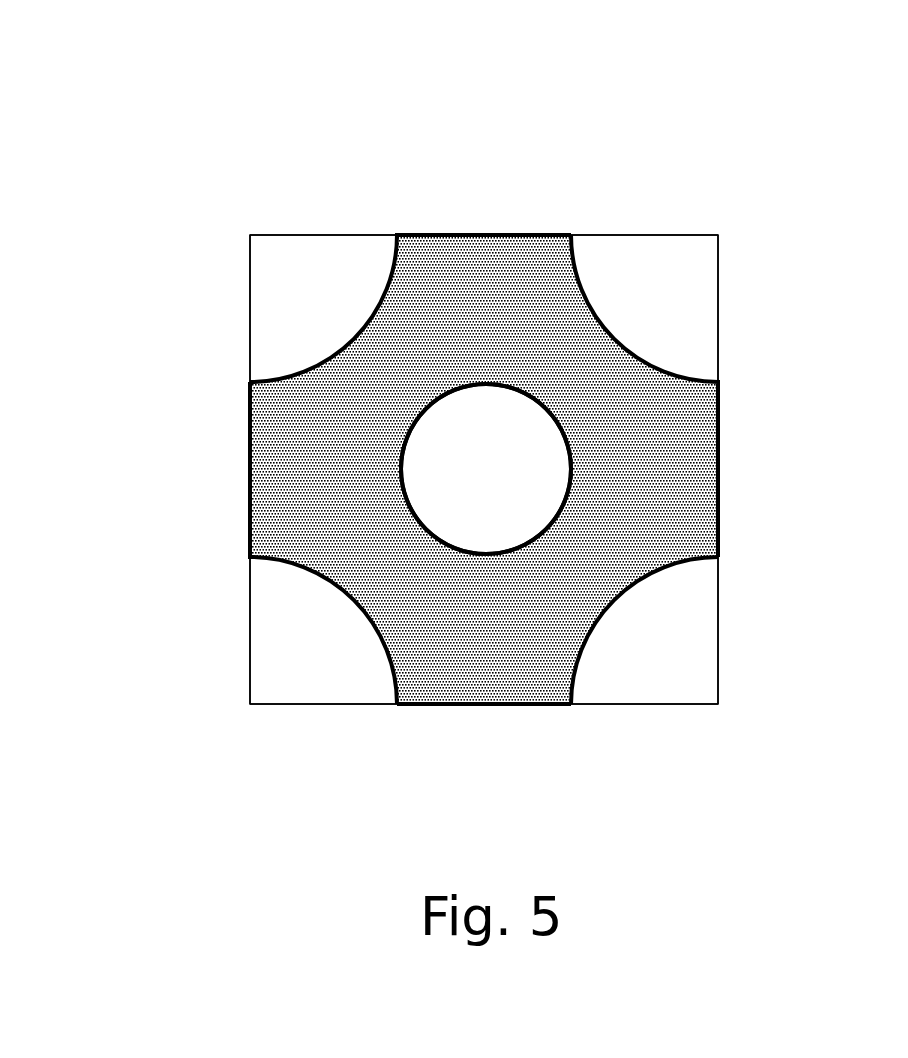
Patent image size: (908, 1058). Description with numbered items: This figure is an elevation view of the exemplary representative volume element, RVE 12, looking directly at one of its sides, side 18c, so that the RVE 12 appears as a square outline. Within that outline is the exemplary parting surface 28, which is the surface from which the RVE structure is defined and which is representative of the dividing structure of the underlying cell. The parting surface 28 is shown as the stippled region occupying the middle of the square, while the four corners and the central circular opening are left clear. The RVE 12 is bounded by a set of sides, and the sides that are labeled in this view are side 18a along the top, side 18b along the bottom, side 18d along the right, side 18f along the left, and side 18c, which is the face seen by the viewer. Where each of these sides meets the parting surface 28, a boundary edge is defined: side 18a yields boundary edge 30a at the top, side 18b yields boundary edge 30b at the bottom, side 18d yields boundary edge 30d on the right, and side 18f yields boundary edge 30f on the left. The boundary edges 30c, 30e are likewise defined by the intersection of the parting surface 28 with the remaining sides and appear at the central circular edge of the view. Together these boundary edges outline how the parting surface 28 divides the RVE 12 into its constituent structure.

The RVE 12 is at (727, 148).
The side 18a is at (302, 234).
The side 18b is at (309, 705).
The side 18c is at (650, 660).
The side 18d is at (718, 298).
The side 18f is at (250, 296).
The parting surface 28 is at (680, 468).
The boundary edge 30a is at (484, 234).
The boundary edge 30b is at (480, 705).
The boundary edge 30c is at (407, 508).
The boundary edge 30d is at (718, 421).
The boundary edge 30e is at (486, 469).
The boundary edge 30f is at (250, 450).